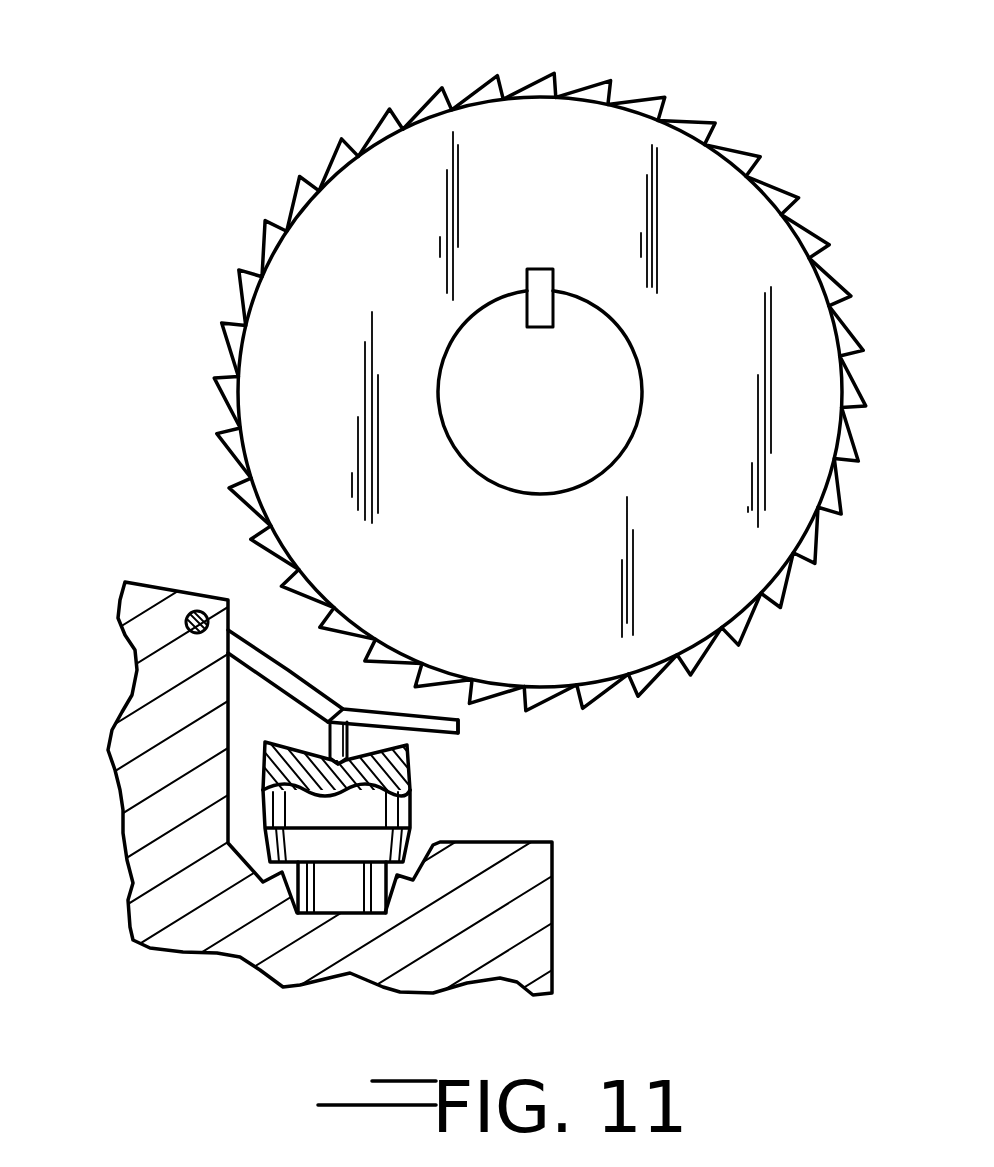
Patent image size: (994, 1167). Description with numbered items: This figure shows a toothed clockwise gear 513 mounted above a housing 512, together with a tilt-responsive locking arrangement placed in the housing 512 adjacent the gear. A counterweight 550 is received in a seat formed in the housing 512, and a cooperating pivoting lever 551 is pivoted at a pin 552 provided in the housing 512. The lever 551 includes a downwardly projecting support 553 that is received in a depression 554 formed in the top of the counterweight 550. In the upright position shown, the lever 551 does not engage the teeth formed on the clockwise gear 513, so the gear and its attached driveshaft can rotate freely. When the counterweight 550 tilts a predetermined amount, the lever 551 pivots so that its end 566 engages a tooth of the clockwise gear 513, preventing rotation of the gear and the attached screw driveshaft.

The clockwise gear 513 is at (468, 88).
The housing 512 is at (485, 847).
The pivot screw 552 is at (186, 626).
The pivoting lever 551 is at (262, 655).
The depression 554 is at (387, 752).
The downwardly projecting support 553 is at (417, 776).
The counterweight 550 is at (417, 808).
The arm end 566 is at (442, 735).